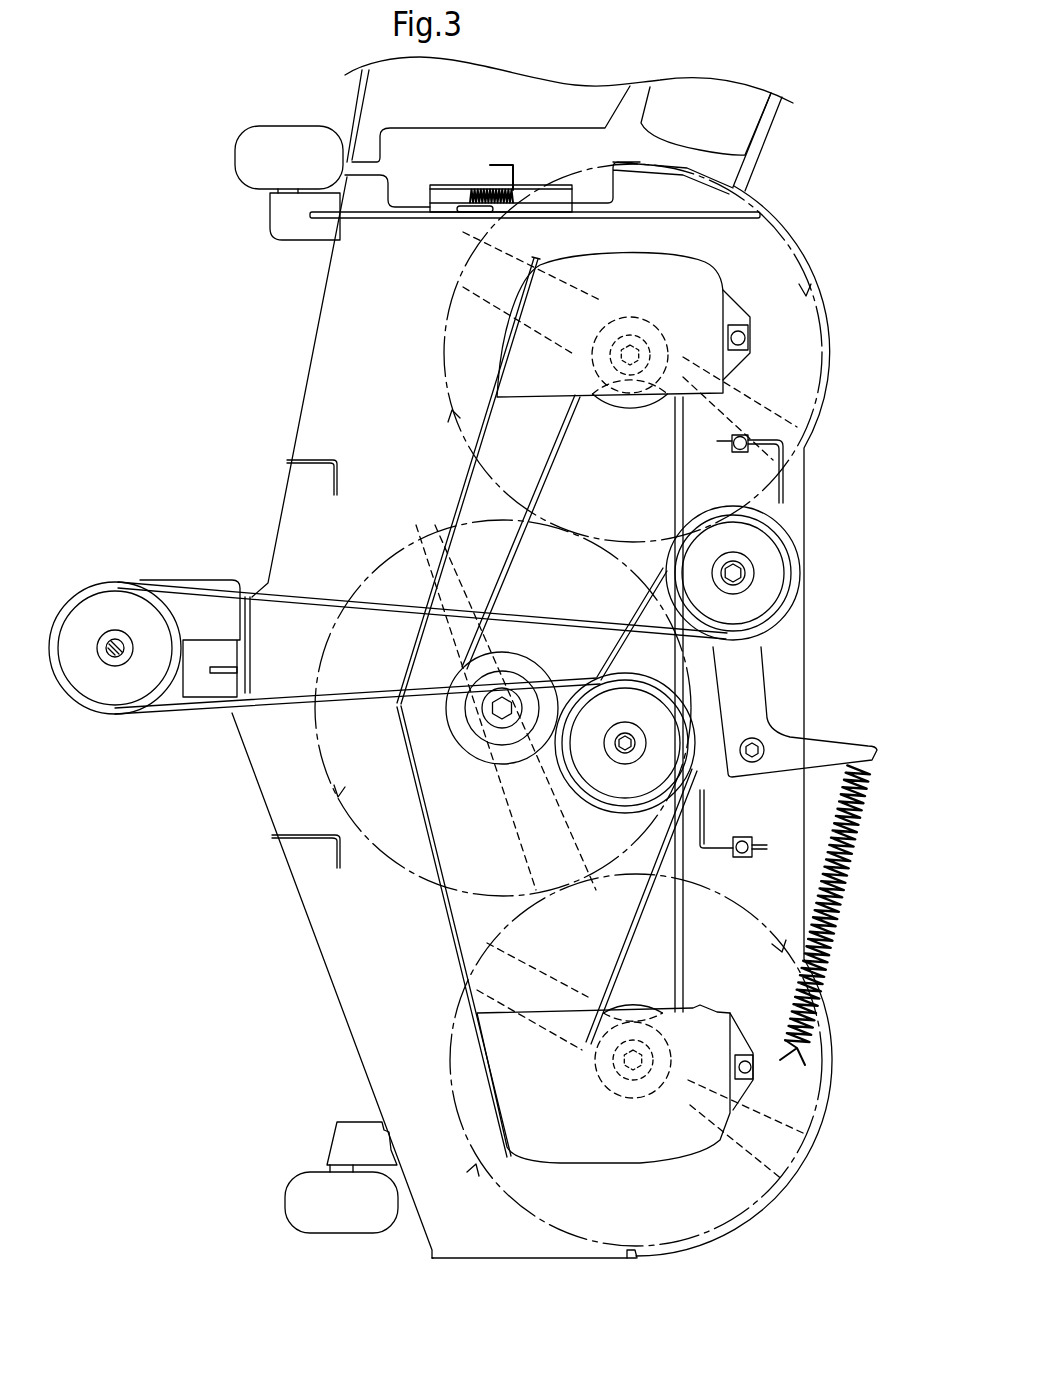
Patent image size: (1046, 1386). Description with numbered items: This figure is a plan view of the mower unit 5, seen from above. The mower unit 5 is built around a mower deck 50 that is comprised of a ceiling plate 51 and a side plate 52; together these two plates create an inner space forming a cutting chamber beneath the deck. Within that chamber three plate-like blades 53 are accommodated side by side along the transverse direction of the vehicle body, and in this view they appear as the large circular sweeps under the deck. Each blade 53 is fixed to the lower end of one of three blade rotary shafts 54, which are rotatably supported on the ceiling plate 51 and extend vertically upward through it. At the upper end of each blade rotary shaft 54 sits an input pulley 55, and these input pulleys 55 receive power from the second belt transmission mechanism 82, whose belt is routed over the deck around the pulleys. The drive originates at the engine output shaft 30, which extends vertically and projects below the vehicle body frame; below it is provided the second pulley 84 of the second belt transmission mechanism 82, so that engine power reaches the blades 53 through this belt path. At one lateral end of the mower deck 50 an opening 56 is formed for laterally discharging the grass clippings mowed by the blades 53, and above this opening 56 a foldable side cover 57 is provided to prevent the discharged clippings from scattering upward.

The mower unit 5 is at (279, 1031).
The engine output shaft 30 is at (114, 640).
The mower deck 50 is at (508, 692).
The ceiling plate 51 is at (332, 405).
The side plate 52 is at (313, 936).
The blade 53 is at (470, 322).
The blade rotary shaft 54 is at (625, 363).
The input pulley 55 is at (648, 405).
The opening 56 is at (592, 101).
The side cover 57 is at (752, 125).
The second belt transmission mechanism 82 is at (291, 594).
The second pulley 84 is at (115, 668).